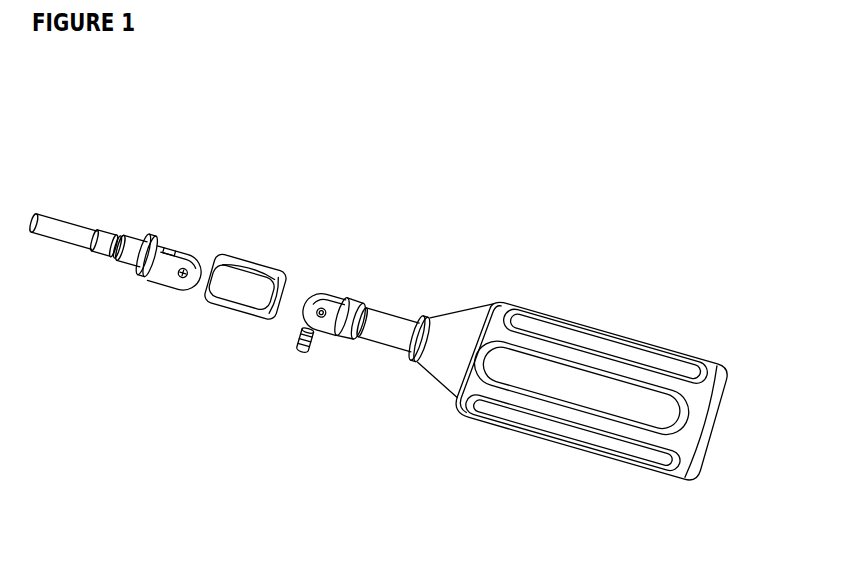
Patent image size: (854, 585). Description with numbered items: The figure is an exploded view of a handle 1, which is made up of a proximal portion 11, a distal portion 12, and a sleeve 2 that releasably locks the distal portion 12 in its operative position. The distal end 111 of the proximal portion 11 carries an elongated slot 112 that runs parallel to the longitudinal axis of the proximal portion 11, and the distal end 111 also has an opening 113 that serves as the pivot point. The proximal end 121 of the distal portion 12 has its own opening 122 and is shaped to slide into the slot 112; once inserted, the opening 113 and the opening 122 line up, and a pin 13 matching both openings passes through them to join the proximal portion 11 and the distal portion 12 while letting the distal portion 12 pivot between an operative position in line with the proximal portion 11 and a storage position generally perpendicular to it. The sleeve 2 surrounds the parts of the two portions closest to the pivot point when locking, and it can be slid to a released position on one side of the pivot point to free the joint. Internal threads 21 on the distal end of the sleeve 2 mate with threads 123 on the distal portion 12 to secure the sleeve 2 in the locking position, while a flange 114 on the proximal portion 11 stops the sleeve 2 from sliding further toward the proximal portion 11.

The handle 1 is at (383, 242).
The proximal portion 11 is at (68, 227).
The distal end 111 is at (170, 268).
The elongated slot 112 is at (185, 252).
The opening 113 is at (187, 280).
The flange 114 is at (146, 275).
The sleeve 2 is at (252, 268).
The internal threads 21 is at (290, 292).
The distal portion 12 is at (395, 310).
The proximal end 121 is at (330, 323).
The opening 122 is at (348, 303).
The threads 123 is at (355, 337).
The pin 13 is at (295, 345).